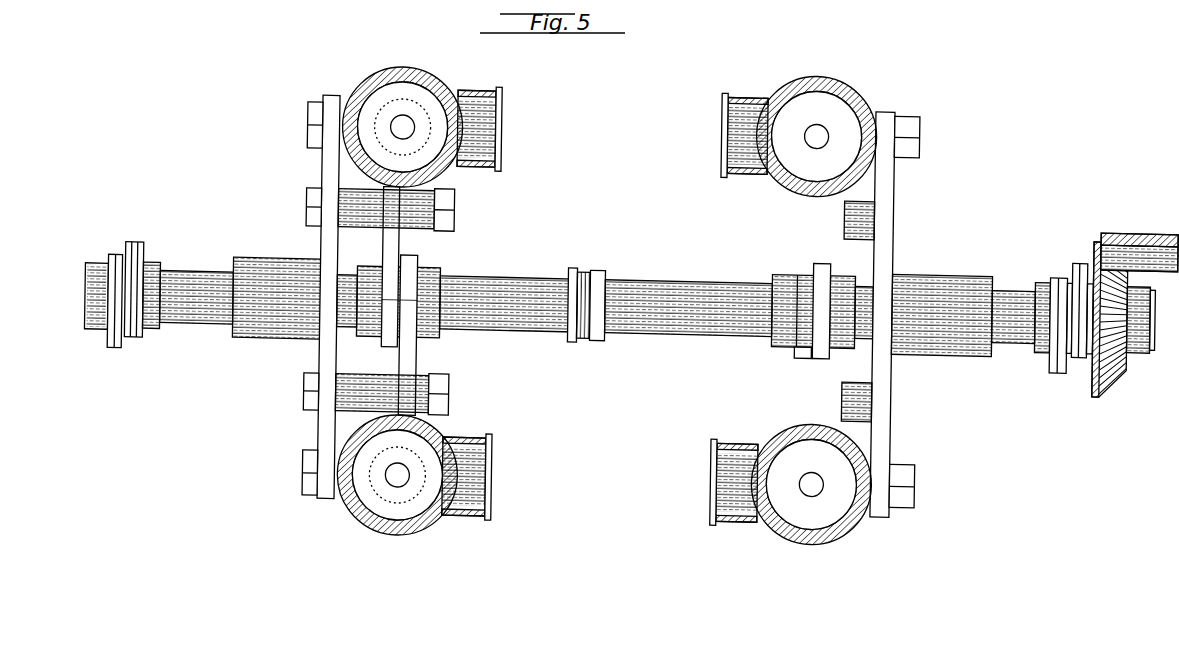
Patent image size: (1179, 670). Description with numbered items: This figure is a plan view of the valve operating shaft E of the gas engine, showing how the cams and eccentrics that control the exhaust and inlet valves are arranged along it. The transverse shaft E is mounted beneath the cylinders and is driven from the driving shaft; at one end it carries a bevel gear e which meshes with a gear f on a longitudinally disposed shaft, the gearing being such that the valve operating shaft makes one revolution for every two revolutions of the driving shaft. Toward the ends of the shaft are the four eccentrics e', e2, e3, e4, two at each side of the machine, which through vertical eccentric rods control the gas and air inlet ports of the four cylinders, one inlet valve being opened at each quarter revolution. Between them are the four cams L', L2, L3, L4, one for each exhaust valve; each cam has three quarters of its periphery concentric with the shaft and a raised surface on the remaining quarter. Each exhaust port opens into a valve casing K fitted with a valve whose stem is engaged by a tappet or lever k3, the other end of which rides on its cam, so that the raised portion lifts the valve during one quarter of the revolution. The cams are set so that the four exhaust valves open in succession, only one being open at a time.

The valve operating shaft E is at (680, 248).
The valve casing K is at (408, 58).
The tappet or lever k3 is at (432, 222).
The cam L' is at (344, 297).
The cam L2 is at (420, 302).
The cam L3 is at (797, 270).
The cam L4 is at (821, 258).
The bevel gear e is at (1124, 322).
The eccentric e' is at (109, 277).
The eccentric e2 is at (141, 249).
The eccentric e3 is at (1056, 264).
The eccentric e4 is at (1080, 250).
The gear f is at (1150, 219).